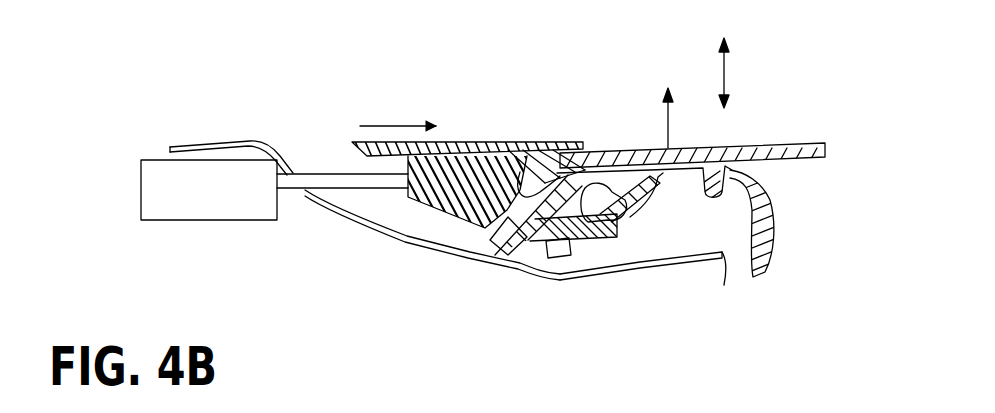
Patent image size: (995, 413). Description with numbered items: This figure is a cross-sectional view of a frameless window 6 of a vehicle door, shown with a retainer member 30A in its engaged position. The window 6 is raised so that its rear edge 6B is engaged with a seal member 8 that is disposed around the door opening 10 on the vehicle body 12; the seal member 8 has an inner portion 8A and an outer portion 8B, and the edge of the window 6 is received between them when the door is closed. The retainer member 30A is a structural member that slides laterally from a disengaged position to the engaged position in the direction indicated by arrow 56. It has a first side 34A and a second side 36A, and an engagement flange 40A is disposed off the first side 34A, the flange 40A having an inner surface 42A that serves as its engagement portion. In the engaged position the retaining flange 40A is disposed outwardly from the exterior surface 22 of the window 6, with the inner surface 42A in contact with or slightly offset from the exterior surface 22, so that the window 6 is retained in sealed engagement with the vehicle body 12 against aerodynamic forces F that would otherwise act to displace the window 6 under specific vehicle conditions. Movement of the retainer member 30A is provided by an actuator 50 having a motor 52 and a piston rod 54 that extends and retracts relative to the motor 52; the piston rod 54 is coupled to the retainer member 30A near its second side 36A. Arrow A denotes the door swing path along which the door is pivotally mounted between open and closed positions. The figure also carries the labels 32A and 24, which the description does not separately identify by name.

The frameless window 6 is at (795, 143).
The rear edge of the window 6B is at (596, 150).
The seal member 8 is at (586, 256).
The inner portion of the seal member 8A is at (653, 208).
The outer portion of the seal member 8B is at (528, 140).
The door opening 10 is at (724, 262).
The vehicle body 12 is at (192, 143).
The exterior surface of the window 22 is at (740, 145).
The hook clip 24 is at (762, 170).
The retainer member 30A is at (420, 220).
The lower element 32A is at (460, 215).
The first side of the retainer member 34A is at (490, 140).
The second side of the retainer member 36A is at (425, 206).
The engagement flange 40A is at (563, 140).
The inner surface of the engagement flange 42A is at (595, 148).
The actuator 50 is at (163, 224).
The motor 52 is at (155, 200).
The piston rod 54 is at (322, 174).
The arrow indicating sliding direction 56 is at (388, 122).
The aerodynamic forces F is at (668, 135).
The arrow indicating door swing path A is at (724, 70).